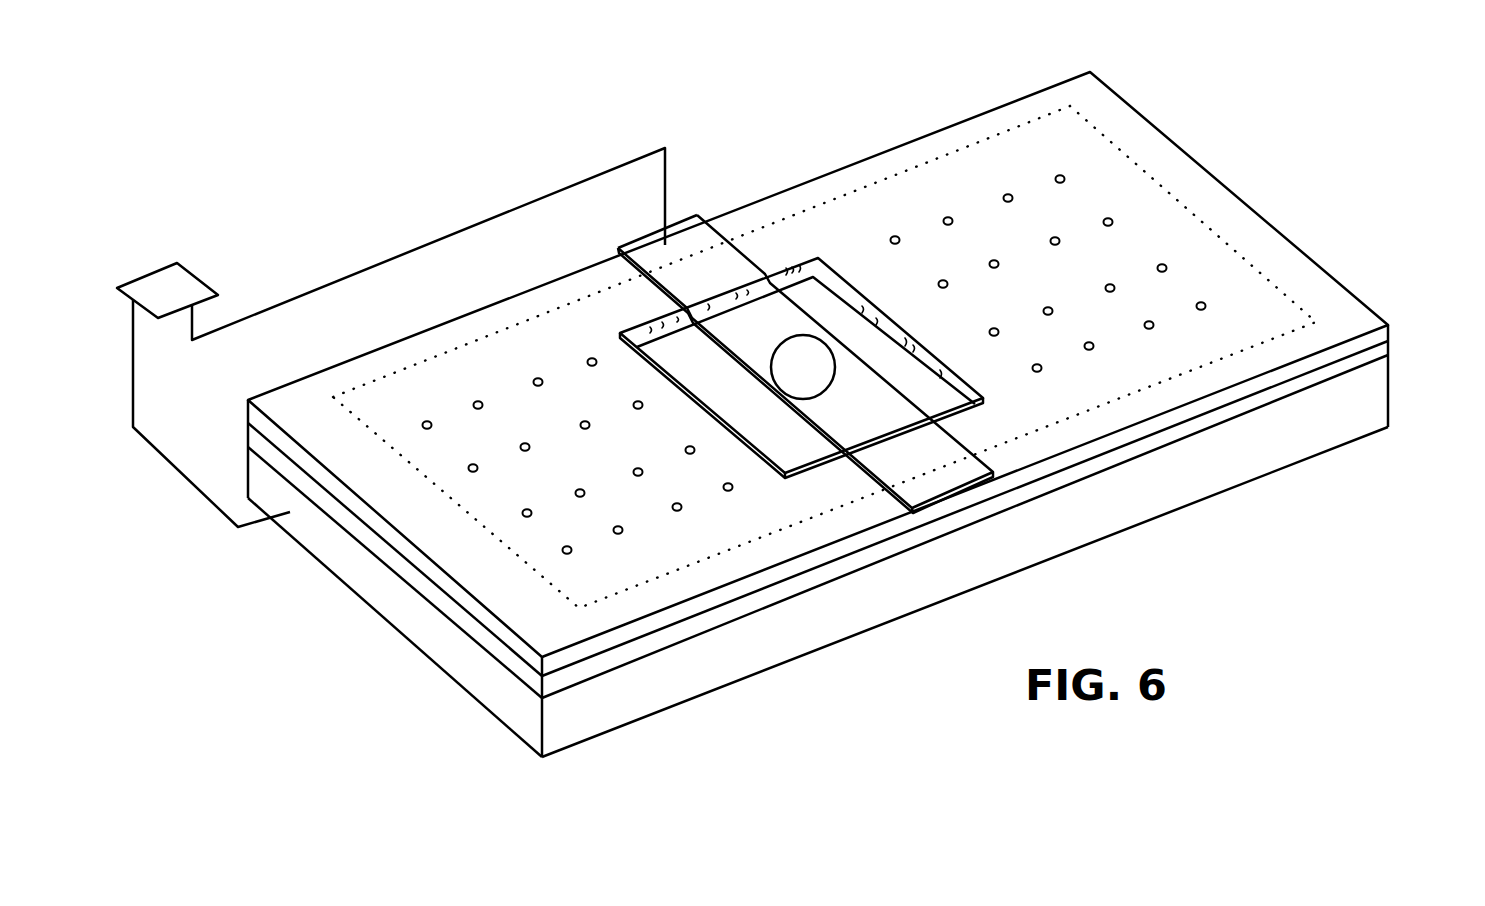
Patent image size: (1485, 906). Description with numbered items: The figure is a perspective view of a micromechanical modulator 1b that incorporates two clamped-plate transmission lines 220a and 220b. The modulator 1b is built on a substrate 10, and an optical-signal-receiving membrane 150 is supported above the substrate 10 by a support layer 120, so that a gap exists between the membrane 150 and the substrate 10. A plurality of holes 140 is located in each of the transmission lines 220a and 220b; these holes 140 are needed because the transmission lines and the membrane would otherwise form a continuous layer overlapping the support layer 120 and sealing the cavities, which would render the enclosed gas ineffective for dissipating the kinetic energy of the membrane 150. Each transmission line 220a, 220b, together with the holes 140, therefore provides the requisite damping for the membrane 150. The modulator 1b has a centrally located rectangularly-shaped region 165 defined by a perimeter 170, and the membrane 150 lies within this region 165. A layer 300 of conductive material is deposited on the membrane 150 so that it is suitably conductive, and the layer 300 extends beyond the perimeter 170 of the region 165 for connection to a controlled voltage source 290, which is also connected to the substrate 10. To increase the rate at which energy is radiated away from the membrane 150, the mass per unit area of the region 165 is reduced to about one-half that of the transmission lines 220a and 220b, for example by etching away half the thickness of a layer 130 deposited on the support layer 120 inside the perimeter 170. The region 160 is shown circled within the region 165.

The micromechanical modulator 1b is at (390, 157).
The substrate 10 is at (1383, 402).
The support layer 120 is at (1383, 352).
The layer 130 is at (1383, 339).
The holes 140 is at (426, 421).
The optical-signal-receiving membrane 150 is at (775, 342).
The sensing region 160 is at (823, 383).
The rectangularly-shaped region 165 is at (718, 412).
The perimeter 170 is at (839, 286).
The clamped-plate transmission line 220a is at (517, 408).
The clamped-plate transmission line 220b is at (992, 220).
The controlled voltage source 290 is at (150, 287).
The layer of conductive material 300 is at (618, 248).